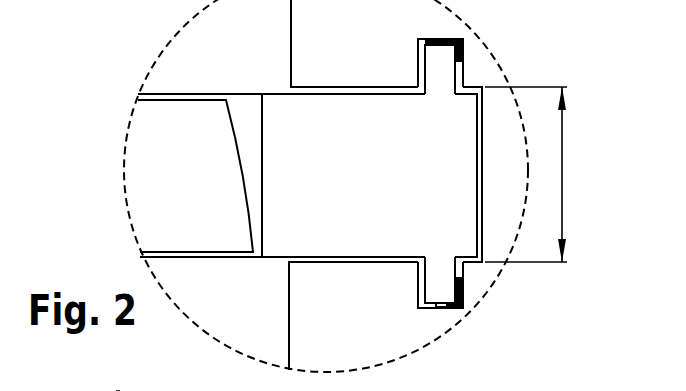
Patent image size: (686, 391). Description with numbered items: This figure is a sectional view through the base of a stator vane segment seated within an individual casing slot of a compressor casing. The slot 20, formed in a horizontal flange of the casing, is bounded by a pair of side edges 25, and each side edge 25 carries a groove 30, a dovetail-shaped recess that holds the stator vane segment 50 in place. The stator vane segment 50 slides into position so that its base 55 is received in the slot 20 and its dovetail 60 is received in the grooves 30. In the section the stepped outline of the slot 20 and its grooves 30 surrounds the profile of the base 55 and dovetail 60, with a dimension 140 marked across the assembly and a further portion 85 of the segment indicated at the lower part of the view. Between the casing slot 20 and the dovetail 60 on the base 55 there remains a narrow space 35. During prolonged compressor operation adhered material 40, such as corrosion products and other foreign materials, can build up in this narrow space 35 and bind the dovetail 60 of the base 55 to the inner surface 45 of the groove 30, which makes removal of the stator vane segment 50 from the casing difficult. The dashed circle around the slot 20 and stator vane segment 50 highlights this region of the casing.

The slot 20 is at (500, 180).
The side edge 25 is at (327, 93).
The groove 30 is at (435, 56).
The narrow space 35 is at (221, 258).
The adhered material 40 is at (463, 55).
The inner surface 45 is at (433, 305).
The stator vane segment 50 is at (112, 252).
The base 55 is at (295, 127).
The dovetail 60 is at (147, 128).
The mounting portion 85 is at (125, 382).
The diameter dimension 140 is at (563, 177).